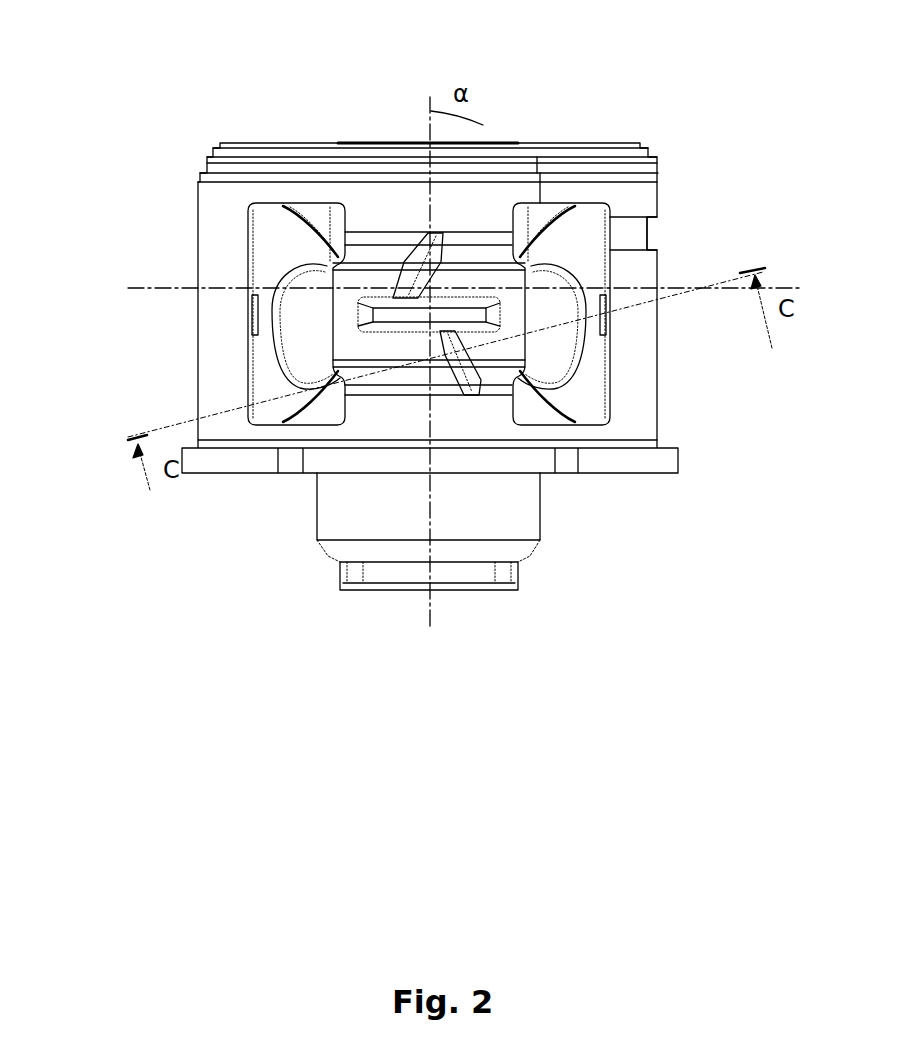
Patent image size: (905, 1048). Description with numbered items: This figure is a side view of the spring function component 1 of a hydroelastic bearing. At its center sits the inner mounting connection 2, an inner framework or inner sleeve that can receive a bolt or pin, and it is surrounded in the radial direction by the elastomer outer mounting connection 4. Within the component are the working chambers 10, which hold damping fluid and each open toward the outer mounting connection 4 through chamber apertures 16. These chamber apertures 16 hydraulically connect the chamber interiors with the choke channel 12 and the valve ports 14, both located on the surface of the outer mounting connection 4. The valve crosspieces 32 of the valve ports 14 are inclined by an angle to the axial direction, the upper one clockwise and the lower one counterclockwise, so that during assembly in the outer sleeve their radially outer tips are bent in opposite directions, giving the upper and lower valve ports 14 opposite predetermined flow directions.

The spring function component 1 is at (168, 22).
The inner mounting connection 2 is at (470, 592).
The outer mounting connection 4 is at (185, 240).
The working chambers 10 is at (265, 375).
The choke channel 12 is at (655, 228).
The valve ports 14 is at (403, 350).
The chamber apertures 16 is at (268, 420).
The valve crosspieces 32 is at (513, 33).